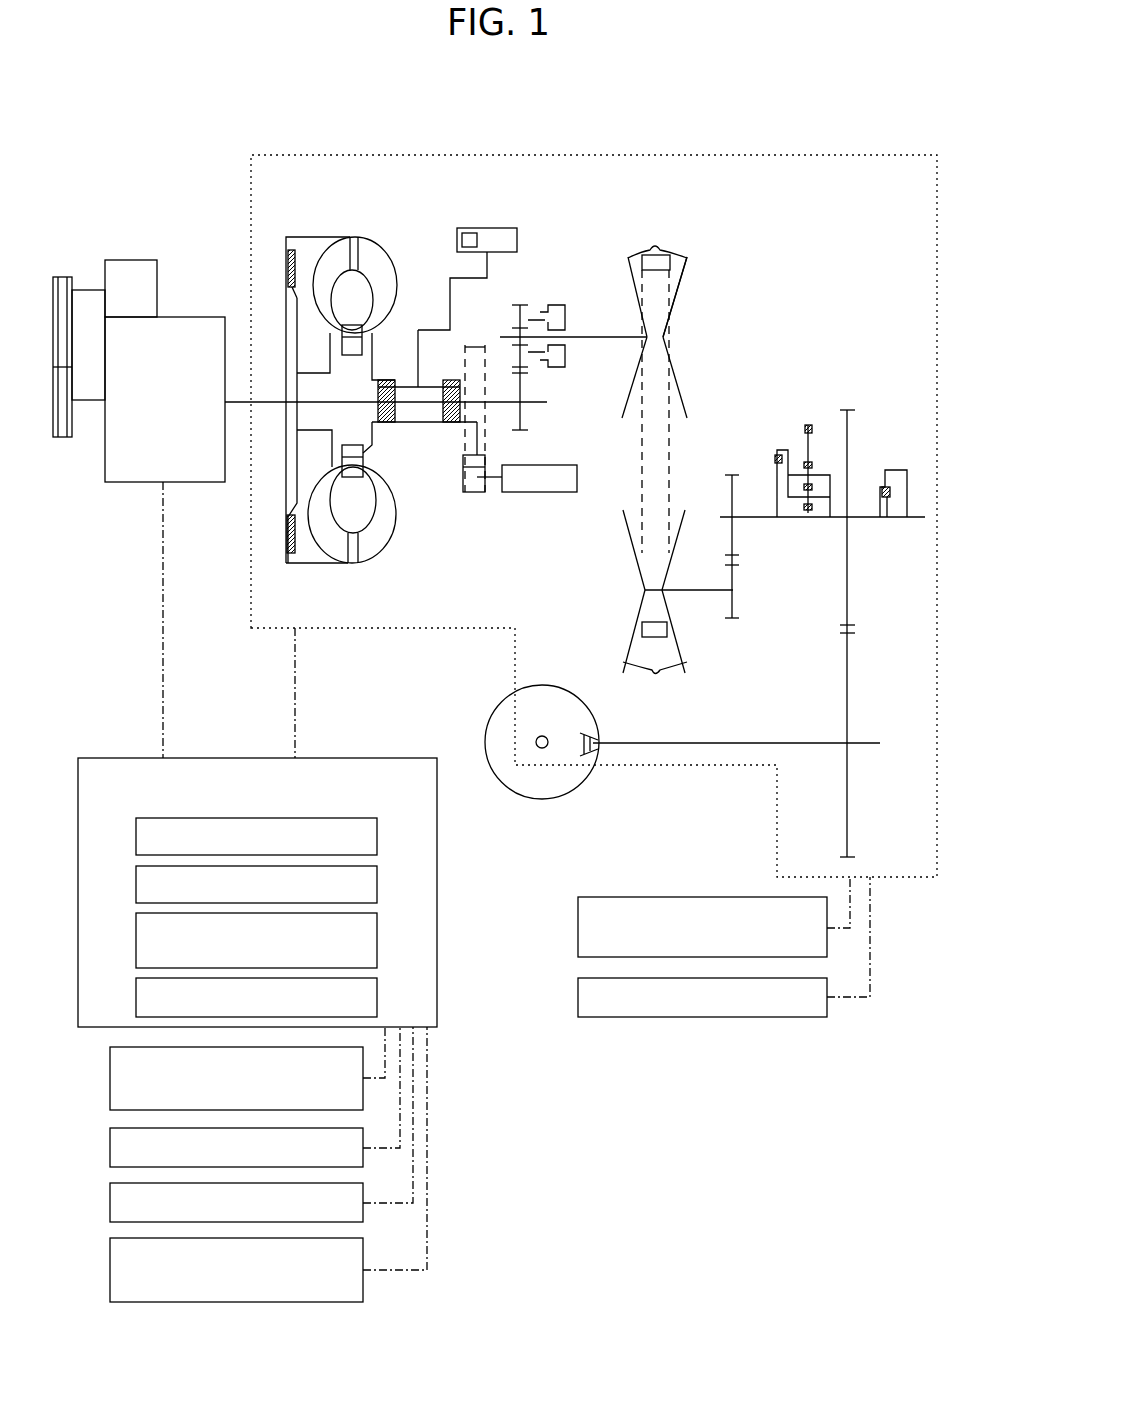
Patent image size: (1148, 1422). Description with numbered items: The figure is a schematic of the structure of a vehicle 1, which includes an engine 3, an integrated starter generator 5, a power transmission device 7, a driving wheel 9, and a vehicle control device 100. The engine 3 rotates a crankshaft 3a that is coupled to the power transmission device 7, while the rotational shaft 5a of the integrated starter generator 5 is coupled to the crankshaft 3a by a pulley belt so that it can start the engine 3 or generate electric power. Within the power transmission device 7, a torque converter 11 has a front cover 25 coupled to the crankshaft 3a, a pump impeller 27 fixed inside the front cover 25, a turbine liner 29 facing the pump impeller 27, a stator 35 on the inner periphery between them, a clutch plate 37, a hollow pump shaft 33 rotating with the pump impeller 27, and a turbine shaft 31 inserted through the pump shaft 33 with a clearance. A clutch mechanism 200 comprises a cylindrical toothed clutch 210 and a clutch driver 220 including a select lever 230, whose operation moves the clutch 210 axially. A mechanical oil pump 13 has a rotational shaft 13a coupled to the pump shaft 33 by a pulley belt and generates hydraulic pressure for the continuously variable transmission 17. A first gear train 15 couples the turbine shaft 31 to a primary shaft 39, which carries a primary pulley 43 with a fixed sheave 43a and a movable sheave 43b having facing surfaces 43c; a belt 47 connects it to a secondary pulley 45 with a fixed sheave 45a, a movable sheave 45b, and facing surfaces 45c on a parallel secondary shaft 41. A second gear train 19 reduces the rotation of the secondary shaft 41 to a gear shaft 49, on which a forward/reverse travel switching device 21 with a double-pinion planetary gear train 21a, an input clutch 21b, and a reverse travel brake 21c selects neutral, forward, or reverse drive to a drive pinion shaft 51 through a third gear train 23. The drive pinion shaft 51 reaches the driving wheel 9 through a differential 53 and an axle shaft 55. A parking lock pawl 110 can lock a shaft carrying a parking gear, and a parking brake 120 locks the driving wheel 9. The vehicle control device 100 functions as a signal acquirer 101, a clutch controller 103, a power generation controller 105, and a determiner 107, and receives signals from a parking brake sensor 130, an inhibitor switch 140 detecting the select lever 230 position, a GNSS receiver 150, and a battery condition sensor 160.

The vehicle 1 is at (225, 80).
The engine 3 is at (172, 411).
The crankshaft 3a is at (240, 400).
The integrated starter generator 5 is at (125, 258).
The rotational shaft 5a is at (85, 288).
The power transmission device 7 is at (305, 152).
The driving wheel 9 is at (545, 800).
The torque converter 11 is at (378, 220).
The mechanical oil pump 13 is at (540, 494).
The rotational shaft 13a is at (490, 480).
The first gear train 15 is at (533, 295).
The continuously variable transmission 17 is at (707, 217).
The second gear train 19 is at (729, 461).
The forward/reverse travel switching device 21 is at (786, 396).
The double-pinion planetary gear train 21a is at (809, 528).
The input clutch 21b is at (777, 452).
The reverse travel brake 21c is at (810, 425).
The third gear train 23 is at (863, 397).
The front cover 25 is at (287, 522).
The pump impeller 27 is at (390, 548).
The turbine liner 29 is at (344, 565).
The turbine shaft 31 is at (330, 405).
The pump shaft 33 is at (386, 380).
The stator 35 is at (365, 461).
The clutch plate 37 is at (290, 565).
The primary shaft 39 is at (587, 334).
The secondary shaft 41 is at (698, 588).
The primary pulley 43 is at (634, 359).
The fixed sheave 43a is at (627, 268).
The movable sheave 43b is at (676, 372).
The facing surfaces 43c is at (656, 249).
The secondary pulley 45 is at (618, 584).
The fixed sheave 45a is at (672, 635).
The movable sheave 45b is at (628, 540).
The facing surfaces 45c is at (657, 672).
The belt 47 is at (641, 630).
The gear shaft 49 is at (755, 520).
The drive pinion shaft 51 is at (738, 741).
The differential 53 is at (598, 734).
The axle shaft 55 is at (548, 736).
The vehicle control device 100 is at (385, 757).
The signal acquirer 101 is at (378, 840).
The clutch controller 103 is at (378, 888).
The power generation controller 105 is at (378, 936).
The determiner 107 is at (378, 1000).
The parking lock pawl 110 is at (577, 928).
The parking brake 120 is at (577, 996).
The parking brake sensor 130 is at (109, 1080).
The inhibitor switch 140 is at (109, 1148).
The GNSS receiver 150 is at (109, 1203).
The battery condition sensor 160 is at (109, 1270).
The clutch mechanism 200 is at (556, 188).
The clutch 210 is at (406, 421).
The clutch driver 220 is at (488, 228).
The select lever 230 is at (460, 239).